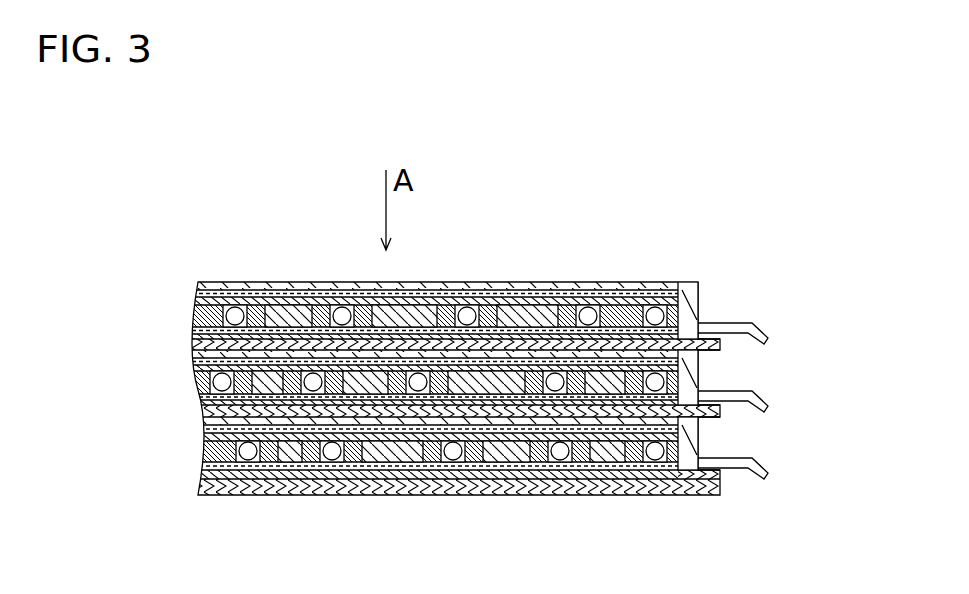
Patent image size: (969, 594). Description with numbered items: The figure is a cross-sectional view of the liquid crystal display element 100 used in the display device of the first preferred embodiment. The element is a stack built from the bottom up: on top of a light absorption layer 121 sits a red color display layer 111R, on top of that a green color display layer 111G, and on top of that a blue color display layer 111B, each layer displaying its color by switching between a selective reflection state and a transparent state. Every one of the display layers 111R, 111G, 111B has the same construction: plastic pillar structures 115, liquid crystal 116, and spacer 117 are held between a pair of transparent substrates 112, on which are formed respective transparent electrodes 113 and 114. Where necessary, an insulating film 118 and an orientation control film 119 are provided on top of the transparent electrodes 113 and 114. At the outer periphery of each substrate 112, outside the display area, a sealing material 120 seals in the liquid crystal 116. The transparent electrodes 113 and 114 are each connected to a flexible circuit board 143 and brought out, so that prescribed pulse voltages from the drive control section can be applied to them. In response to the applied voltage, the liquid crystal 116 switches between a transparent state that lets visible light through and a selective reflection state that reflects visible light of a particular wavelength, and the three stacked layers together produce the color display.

The liquid crystal display element 100 is at (309, 182).
The blue color display layer 111B is at (104, 305).
The green color display layer 111G is at (104, 358).
The red color display layer 111R is at (104, 412).
The transparent substrate 112 is at (240, 283).
The transparent electrode 113 is at (233, 290).
The transparent electrode 114 is at (200, 330).
The plastic pillar structure 115 is at (270, 310).
The liquid crystal 116 is at (432, 310).
The spacer 117 is at (336, 305).
The insulating film 118 is at (498, 292).
The orientation control film 119 is at (482, 297).
The sealing material 120 is at (688, 297).
The light absorption layer 121 is at (393, 490).
The flexible circuit board 143 is at (737, 323).